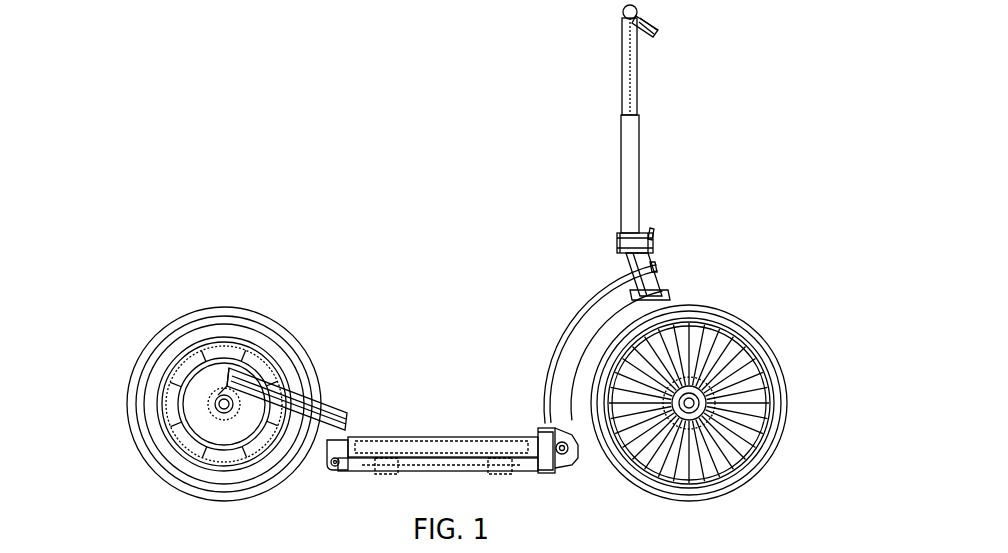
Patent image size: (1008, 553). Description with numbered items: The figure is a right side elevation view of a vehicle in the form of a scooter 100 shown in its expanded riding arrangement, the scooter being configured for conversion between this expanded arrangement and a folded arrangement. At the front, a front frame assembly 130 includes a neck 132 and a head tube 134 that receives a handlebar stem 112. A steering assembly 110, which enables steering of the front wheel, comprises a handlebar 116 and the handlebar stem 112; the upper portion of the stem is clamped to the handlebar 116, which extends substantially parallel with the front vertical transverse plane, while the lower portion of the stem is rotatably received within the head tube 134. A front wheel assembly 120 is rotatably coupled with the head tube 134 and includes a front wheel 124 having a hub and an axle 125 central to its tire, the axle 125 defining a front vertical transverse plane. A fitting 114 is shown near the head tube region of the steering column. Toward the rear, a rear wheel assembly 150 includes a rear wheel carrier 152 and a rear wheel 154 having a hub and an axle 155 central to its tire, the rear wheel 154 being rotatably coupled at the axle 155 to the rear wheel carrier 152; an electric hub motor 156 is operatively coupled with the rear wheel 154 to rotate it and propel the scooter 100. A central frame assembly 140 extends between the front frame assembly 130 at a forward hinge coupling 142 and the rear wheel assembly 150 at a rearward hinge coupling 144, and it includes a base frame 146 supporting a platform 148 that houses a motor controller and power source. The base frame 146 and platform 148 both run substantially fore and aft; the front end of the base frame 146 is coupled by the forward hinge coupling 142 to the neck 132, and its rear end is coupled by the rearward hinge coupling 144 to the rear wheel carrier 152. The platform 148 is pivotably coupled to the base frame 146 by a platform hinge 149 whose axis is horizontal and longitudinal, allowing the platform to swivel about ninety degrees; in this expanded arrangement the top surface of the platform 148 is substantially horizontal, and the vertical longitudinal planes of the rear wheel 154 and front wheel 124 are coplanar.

The scooter 100 is at (202, 101).
The steering assembly 110 is at (723, 142).
The handlebar stem 112 is at (622, 151).
The steering clamp 114 is at (652, 236).
The handlebar 116 is at (623, 13).
The front wheel assembly 120 is at (755, 297).
The front wheel 124 is at (765, 460).
The axle 125 is at (696, 403).
The front frame assembly 130 is at (522, 214).
The neck 132 is at (565, 331).
The head tube 134 is at (632, 268).
The central frame assembly 140 is at (414, 270).
The forward hinge coupling 142 is at (561, 446).
The rearward hinge coupling 144 is at (337, 444).
The base frame 146 is at (360, 468).
The platform 148 is at (521, 438).
The platform hinge 149 is at (381, 456).
The rear wheel assembly 150 is at (254, 257).
The rear wheel carrier 152 is at (273, 382).
The rear wheel 154 is at (180, 320).
The axle 155 is at (217, 405).
The electric hub motor 156 is at (178, 398).